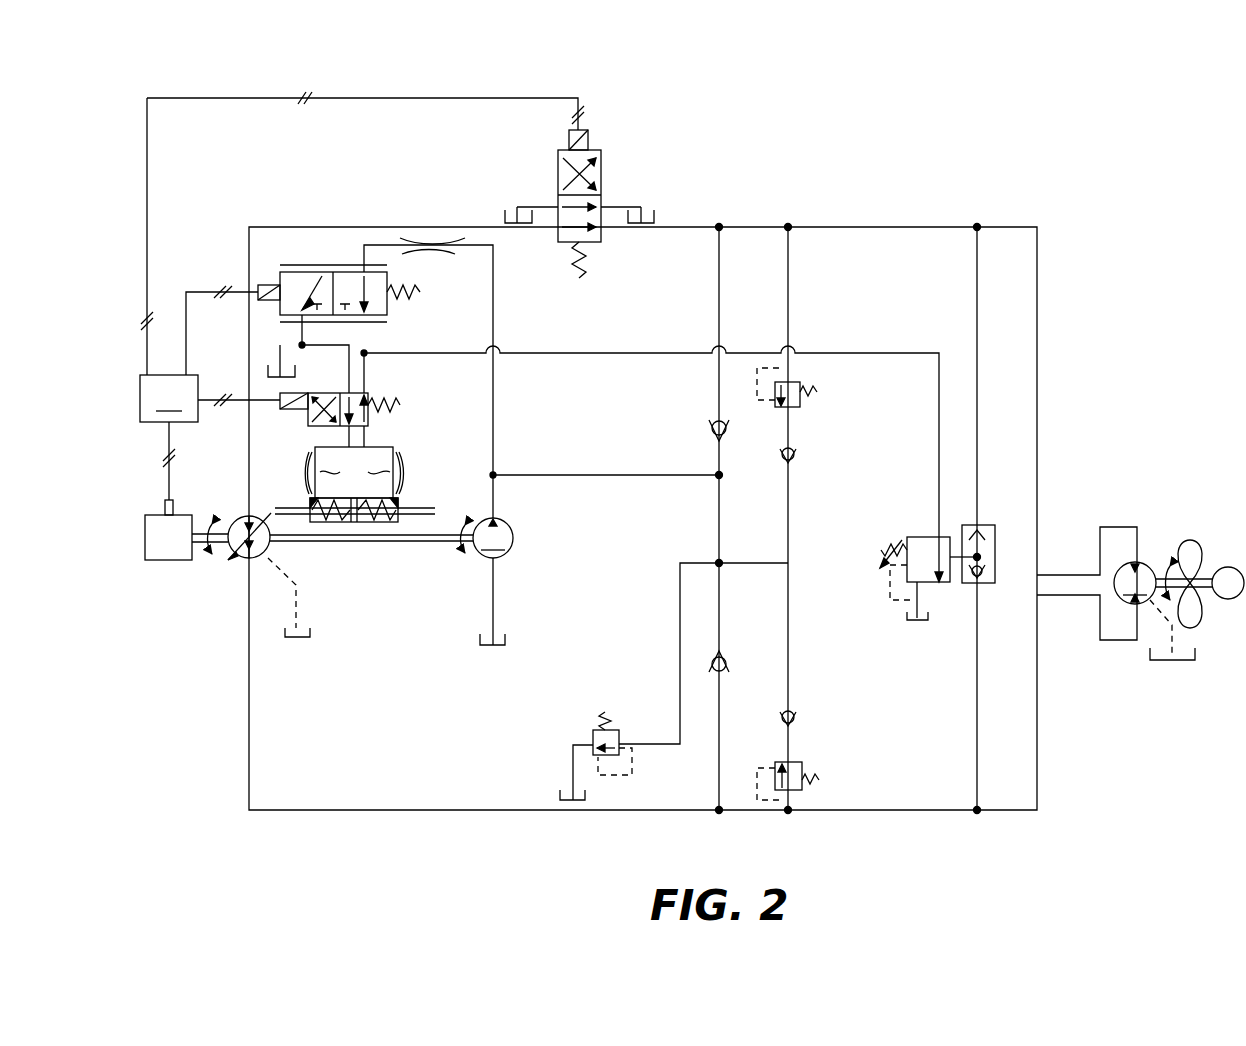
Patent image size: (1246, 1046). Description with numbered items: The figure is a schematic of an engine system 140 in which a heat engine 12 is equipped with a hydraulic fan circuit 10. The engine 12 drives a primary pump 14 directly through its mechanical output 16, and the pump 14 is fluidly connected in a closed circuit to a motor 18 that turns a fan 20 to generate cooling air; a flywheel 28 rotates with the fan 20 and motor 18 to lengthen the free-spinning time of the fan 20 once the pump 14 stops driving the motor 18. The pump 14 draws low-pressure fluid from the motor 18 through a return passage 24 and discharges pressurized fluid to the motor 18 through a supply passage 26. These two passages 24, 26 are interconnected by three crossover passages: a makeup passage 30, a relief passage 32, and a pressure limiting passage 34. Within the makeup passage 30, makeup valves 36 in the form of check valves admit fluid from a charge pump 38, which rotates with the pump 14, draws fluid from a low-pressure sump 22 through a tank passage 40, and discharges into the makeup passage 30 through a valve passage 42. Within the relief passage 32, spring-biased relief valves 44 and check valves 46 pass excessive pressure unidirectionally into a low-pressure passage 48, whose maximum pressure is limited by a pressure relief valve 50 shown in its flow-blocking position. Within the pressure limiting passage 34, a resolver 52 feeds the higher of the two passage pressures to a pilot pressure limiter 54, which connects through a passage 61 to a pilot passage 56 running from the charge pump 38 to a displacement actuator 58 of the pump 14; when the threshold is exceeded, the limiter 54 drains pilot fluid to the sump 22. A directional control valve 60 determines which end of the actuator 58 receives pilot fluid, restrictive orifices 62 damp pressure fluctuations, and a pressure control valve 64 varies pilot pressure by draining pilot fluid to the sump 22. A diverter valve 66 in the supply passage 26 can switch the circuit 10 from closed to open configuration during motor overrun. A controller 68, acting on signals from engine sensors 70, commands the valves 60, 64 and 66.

The hydraulic fan circuit 10 is at (1108, 305).
The heat engine 12 is at (168, 562).
The primary pump 14 is at (249, 516).
The mechanical output 16 is at (206, 556).
The motor 18 is at (1104, 591).
The fan 20 is at (1190, 540).
The low-pressure sump 22 is at (520, 226).
The return passage 24 is at (249, 730).
The supply passage 26 is at (249, 320).
The flywheel 28 is at (1226, 600).
The makeup passage 30 is at (719, 288).
The relief passage 32 is at (788, 288).
The pressure limiting passage 34 is at (977, 290).
The makeup valves 36 is at (711, 424).
The charge pump 38 is at (391, 538).
The tank passage 40 is at (493, 590).
The valve passage 42 is at (600, 475).
The relief valves 44 is at (800, 400).
The check valves 46 is at (795, 457).
The low-pressure passage 48 is at (680, 640).
The pressure relief valve 50 is at (612, 728).
The resolver 52 is at (995, 580).
The pilot pressure limiter 54 is at (920, 537).
The pilot passage 56 is at (493, 408).
The displacement actuator 58 is at (430, 500).
The directional control valve 60 is at (368, 396).
The passage 61 is at (870, 352).
The restrictive orifices 62 is at (458, 252).
The pressure control valve 64 is at (302, 265).
The diverter valve 66 is at (560, 248).
The controller 68 is at (169, 398).
The engine sensors 70 is at (169, 482).
The engine system 140 is at (228, 774).